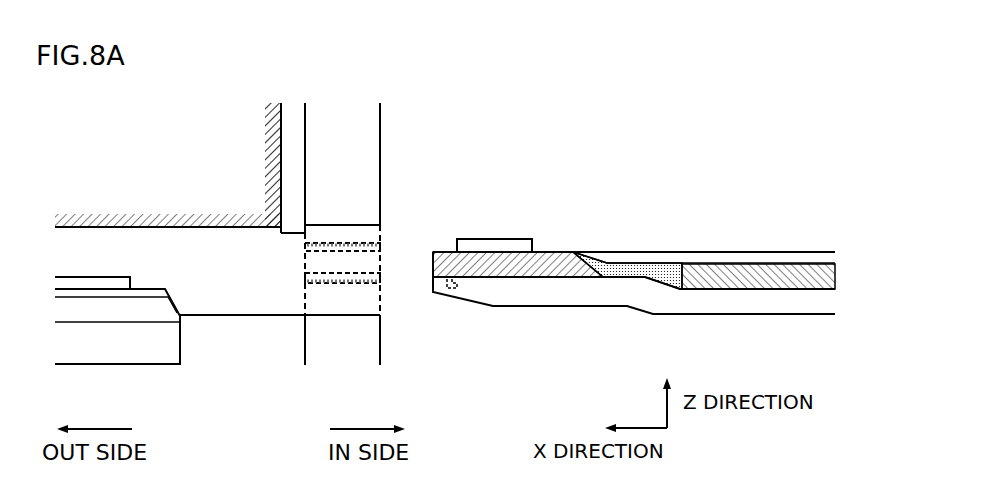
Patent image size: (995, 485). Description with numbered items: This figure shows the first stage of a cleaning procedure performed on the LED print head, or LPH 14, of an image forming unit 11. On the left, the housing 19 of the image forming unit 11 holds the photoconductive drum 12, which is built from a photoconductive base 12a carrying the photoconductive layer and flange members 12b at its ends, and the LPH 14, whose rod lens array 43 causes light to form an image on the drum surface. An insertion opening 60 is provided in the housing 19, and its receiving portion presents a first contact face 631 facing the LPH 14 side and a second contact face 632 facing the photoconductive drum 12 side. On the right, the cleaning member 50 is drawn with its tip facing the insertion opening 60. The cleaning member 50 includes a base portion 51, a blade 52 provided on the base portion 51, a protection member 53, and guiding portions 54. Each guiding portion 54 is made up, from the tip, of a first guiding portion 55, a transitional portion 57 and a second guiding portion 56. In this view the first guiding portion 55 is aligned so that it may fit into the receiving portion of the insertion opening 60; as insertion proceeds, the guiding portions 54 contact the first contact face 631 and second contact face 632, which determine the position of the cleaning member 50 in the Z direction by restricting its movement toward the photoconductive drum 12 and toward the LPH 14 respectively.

The image forming unit 11 is at (490, 100).
The photoconductive drum 12 is at (181, 247).
The photoconductive base 12a is at (92, 227).
The flange member 12b is at (290, 138).
The LED print head (LPH) 14 is at (146, 368).
The housing 19 is at (380, 124).
The rod lens array 43 is at (105, 277).
The cleaning member 50 is at (634, 241).
The base portion 51 is at (646, 251).
The blade 52 is at (458, 284).
The protection member 53 is at (489, 238).
The guiding portion 54 is at (710, 256).
The first guiding portion 55 is at (528, 287).
The second guiding portion 56 is at (739, 295).
The transitional portion 57 is at (616, 287).
The insertion opening 60 is at (397, 235).
The first contact face 631 is at (322, 246).
The second contact face 632 is at (367, 273).